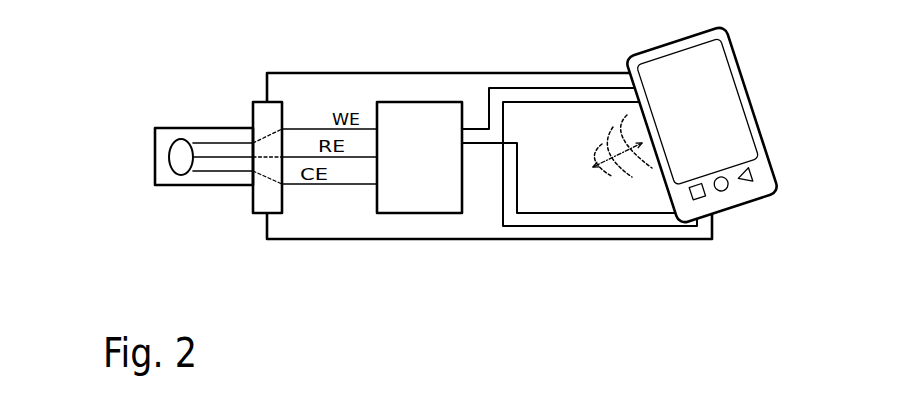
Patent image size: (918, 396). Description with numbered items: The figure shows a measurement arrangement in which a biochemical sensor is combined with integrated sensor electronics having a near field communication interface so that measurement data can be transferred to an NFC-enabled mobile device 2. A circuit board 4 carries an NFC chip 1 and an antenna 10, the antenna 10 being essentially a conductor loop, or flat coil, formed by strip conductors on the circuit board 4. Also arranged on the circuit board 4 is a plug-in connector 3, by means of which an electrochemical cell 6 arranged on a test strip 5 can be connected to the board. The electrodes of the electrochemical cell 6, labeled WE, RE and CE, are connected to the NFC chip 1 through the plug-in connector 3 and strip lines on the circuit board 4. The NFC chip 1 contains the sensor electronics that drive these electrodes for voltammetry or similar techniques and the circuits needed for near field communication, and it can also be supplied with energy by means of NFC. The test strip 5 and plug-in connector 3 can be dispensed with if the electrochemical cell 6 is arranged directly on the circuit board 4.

The NFC chip 1 is at (462, 162).
The NFC-enabled mobile device 2 is at (780, 165).
The plug-in connector 3 is at (257, 214).
The circuit board 4 is at (580, 240).
The test strip 5 is at (153, 187).
The electrochemical cell 6 is at (182, 158).
The antenna 10 is at (528, 88).